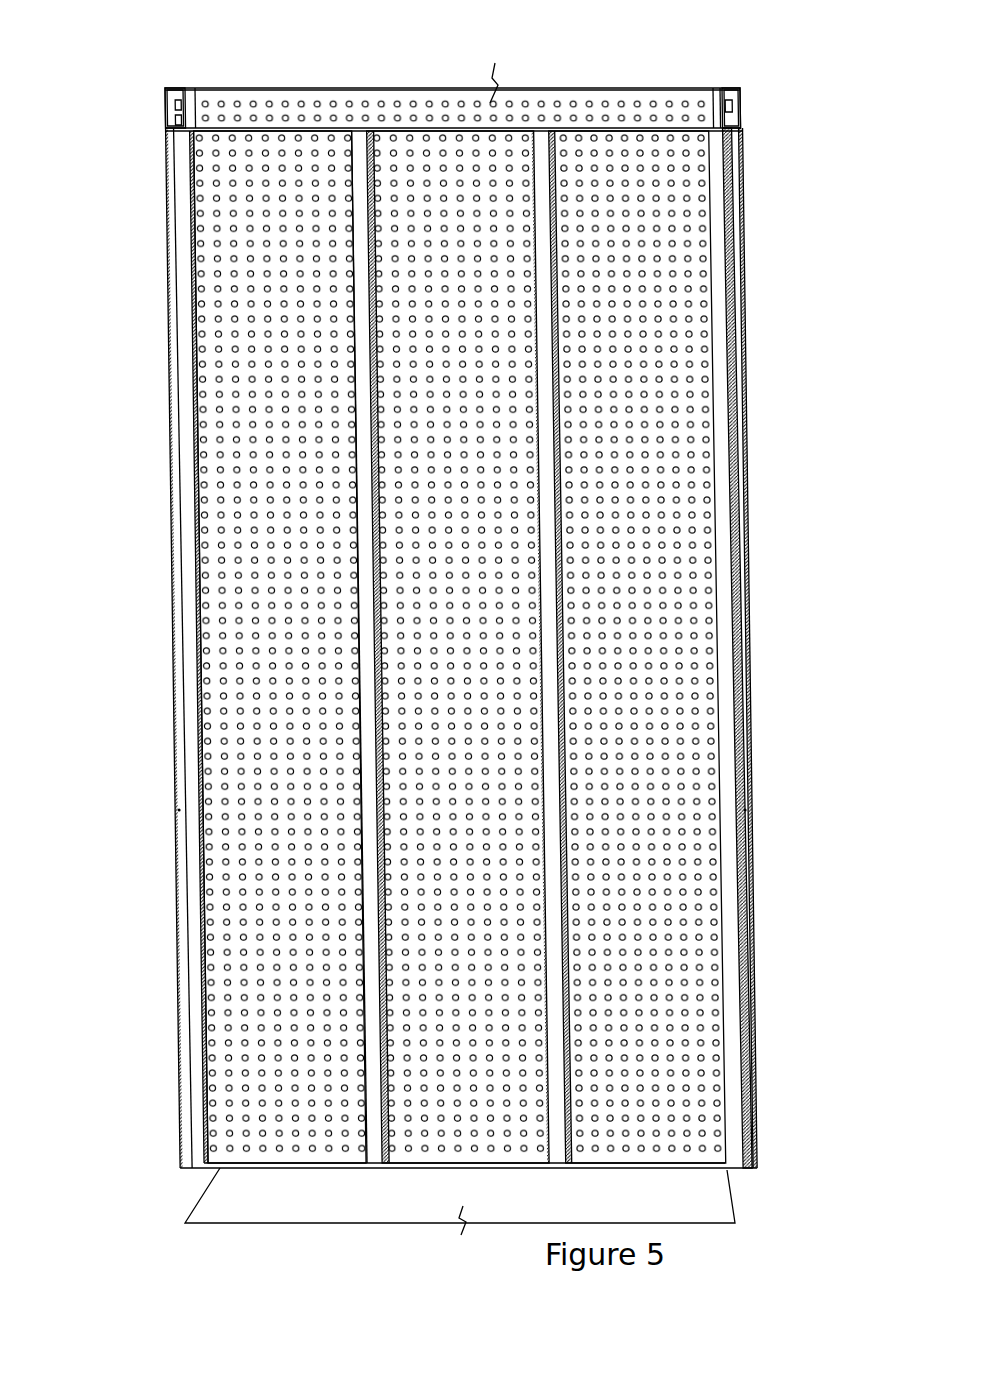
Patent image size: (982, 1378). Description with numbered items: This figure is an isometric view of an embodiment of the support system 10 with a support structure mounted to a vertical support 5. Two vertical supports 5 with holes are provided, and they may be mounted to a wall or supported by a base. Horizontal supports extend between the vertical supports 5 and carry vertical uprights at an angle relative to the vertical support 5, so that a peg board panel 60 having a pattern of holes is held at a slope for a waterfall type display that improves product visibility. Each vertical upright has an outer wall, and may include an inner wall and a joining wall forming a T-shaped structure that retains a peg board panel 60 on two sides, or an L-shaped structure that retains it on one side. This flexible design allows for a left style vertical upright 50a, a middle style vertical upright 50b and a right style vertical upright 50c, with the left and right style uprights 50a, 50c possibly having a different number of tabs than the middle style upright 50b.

The support system 10 is at (108, 575).
The vertical support 5 is at (170, 107).
The left style vertical upright 50a is at (182, 90).
The middle style vertical upright 50b is at (363, 125).
The right style vertical upright 50c is at (737, 218).
The peg board panel 60 is at (270, 128).